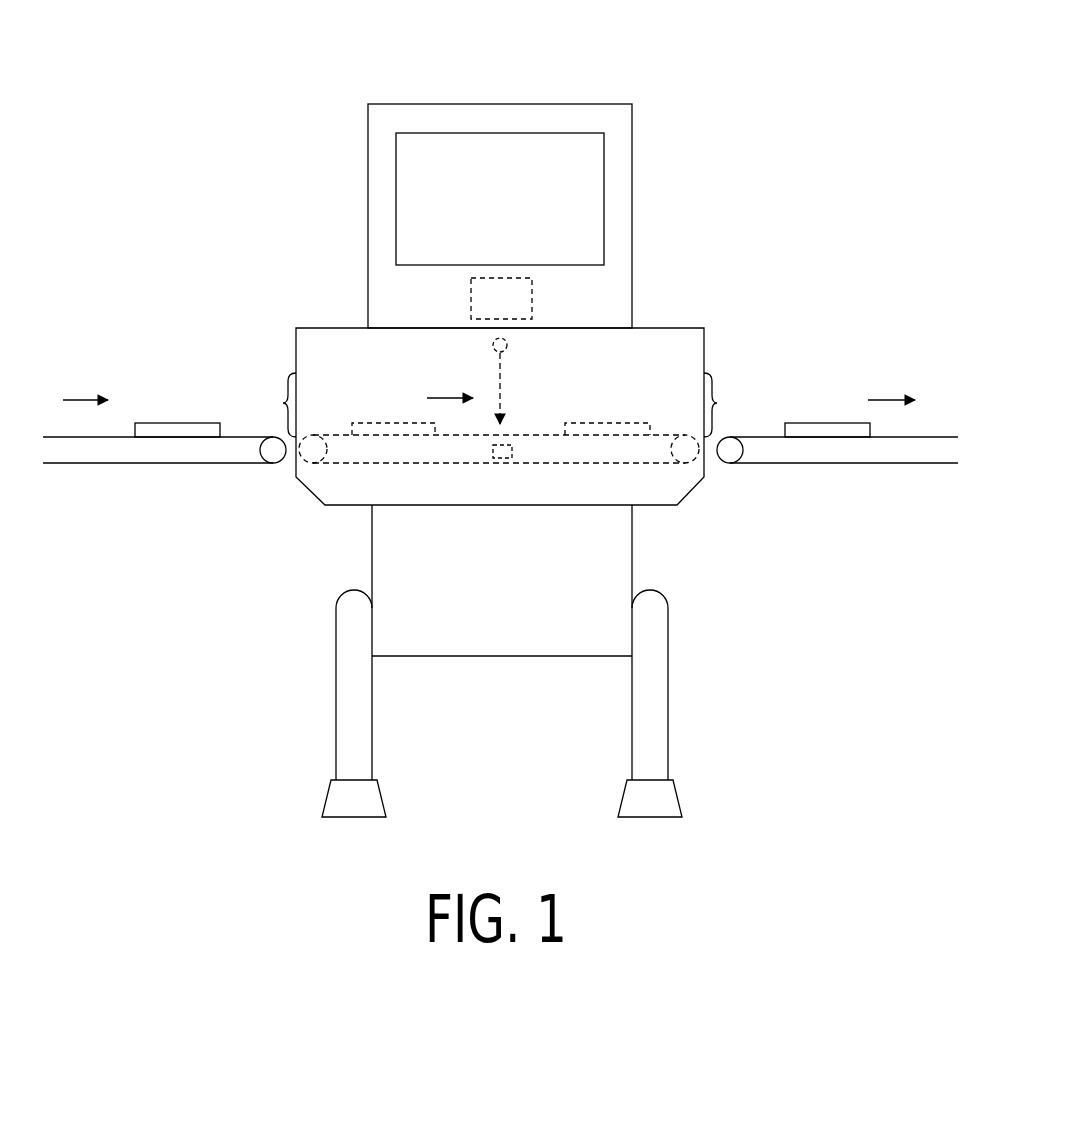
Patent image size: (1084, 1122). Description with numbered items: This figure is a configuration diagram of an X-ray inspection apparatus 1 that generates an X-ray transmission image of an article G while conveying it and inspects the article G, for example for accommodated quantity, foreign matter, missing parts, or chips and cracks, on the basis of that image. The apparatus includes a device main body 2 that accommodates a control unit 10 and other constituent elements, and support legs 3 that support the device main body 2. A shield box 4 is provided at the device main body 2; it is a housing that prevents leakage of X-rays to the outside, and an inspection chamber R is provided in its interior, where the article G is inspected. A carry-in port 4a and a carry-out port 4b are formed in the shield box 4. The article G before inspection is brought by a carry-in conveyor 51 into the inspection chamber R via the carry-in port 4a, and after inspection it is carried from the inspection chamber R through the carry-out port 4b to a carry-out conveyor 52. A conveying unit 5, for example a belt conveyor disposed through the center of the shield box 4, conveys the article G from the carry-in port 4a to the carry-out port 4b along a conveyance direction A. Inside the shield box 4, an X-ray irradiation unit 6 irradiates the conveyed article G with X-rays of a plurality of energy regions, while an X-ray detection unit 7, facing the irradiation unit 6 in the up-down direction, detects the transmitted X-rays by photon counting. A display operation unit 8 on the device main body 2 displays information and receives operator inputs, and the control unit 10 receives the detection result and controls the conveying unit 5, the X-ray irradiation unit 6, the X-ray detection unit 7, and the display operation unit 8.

The X-ray inspection apparatus 1 is at (718, 70).
The device main body 2 is at (368, 163).
The support legs 3 is at (336, 703).
The shield box 4 is at (704, 345).
The carry-in port 4a is at (283, 403).
The carry-out port 4b is at (717, 403).
The conveying unit 5 is at (358, 466).
The X-ray irradiation unit 6 is at (507, 343).
The X-ray detection unit 7 is at (512, 450).
The display operation unit 8 is at (604, 220).
The control unit 10 is at (471, 301).
The carry-in conveyor 51 is at (130, 465).
The carry-out conveyor 52 is at (912, 465).
The article G is at (170, 423).
The conveyance direction A is at (440, 398).
The inspection chamber R is at (527, 391).